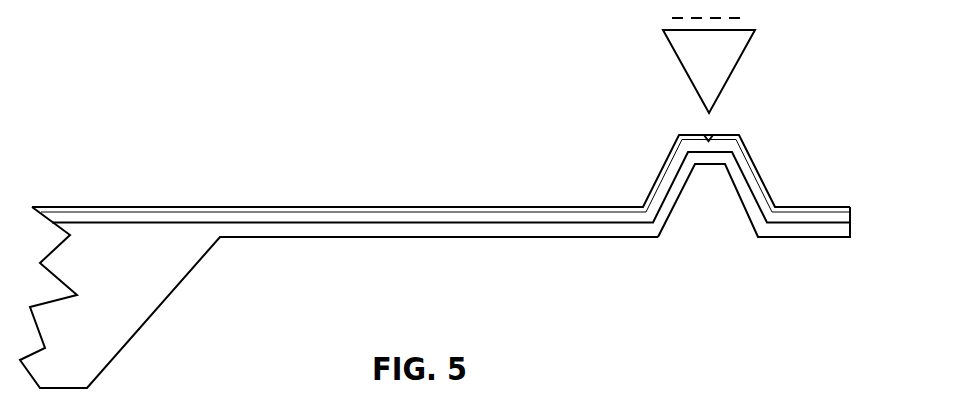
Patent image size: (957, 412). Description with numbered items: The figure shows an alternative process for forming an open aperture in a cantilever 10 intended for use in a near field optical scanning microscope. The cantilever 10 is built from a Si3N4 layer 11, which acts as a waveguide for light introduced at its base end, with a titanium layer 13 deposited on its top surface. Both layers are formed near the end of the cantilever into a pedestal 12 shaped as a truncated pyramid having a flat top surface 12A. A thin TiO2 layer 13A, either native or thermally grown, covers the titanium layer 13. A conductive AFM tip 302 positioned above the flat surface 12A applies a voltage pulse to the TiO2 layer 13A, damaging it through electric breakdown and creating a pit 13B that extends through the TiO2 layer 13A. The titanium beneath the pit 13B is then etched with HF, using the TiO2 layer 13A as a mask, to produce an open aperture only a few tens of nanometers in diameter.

The cantilever 10 is at (412, 124).
The Si3N4 layer 11 is at (483, 230).
The pedestal 12 is at (789, 163).
The flat top surface 12A is at (724, 134).
The titanium layer 13 is at (539, 217).
The TiO2 layer 13A is at (262, 209).
The pit 13B is at (706, 128).
The AFM tip 302 is at (737, 56).